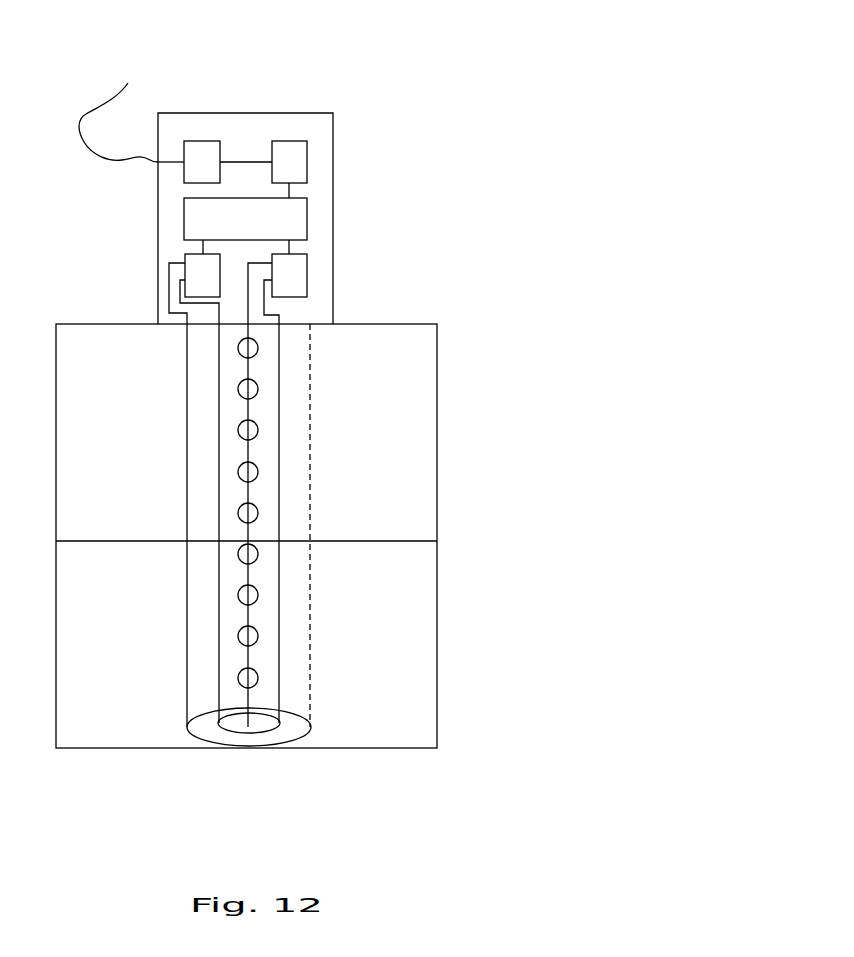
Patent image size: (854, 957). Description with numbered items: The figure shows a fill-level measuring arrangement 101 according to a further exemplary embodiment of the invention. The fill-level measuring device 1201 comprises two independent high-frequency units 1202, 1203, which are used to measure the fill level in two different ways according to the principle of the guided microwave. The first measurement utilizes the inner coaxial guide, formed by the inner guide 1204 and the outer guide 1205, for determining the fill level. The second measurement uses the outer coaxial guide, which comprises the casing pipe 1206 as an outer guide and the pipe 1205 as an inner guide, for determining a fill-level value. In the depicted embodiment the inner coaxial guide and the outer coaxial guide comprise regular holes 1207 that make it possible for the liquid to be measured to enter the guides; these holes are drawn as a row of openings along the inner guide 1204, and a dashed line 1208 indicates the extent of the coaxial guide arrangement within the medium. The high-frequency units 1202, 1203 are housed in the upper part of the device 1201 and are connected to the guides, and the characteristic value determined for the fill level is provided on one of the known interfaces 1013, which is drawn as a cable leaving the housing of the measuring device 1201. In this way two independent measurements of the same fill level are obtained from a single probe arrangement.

The measuring device 101 is at (457, 73).
The interface 1013 is at (118, 110).
The fill-level measuring device 1201 is at (333, 153).
The high-frequency unit 1202 is at (307, 280).
The high-frequency unit 1203 is at (178, 258).
The inner guide 1204 is at (250, 414).
The outer guide 1205 is at (280, 483).
The casing pipe 1206 is at (187, 598).
The electrode 1207 is at (258, 553).
The axis line / medium boundary 1208 is at (313, 645).